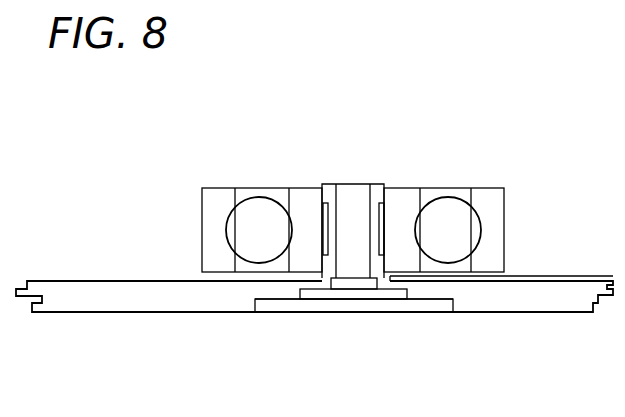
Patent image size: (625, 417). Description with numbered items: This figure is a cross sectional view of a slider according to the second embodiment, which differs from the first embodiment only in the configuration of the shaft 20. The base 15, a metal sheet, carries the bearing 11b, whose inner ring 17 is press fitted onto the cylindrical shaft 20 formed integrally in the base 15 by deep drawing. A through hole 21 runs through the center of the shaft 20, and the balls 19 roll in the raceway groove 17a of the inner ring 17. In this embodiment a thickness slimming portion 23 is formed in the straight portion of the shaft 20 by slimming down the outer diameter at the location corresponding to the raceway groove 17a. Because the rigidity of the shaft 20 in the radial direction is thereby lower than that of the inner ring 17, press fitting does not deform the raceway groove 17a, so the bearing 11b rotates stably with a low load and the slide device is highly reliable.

The base 15 is at (543, 292).
The inner ring 17 is at (311, 240).
The raceway groove 17a is at (295, 190).
The bearing 11b is at (458, 188).
The ball 19 is at (277, 219).
The shaft 20 is at (322, 184).
The through hole 21 is at (357, 190).
The thickness slimming portion 23 is at (320, 212).